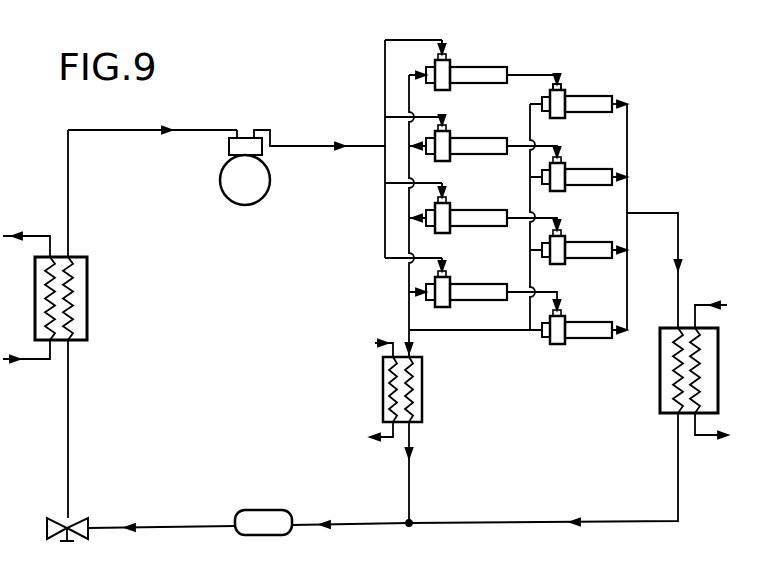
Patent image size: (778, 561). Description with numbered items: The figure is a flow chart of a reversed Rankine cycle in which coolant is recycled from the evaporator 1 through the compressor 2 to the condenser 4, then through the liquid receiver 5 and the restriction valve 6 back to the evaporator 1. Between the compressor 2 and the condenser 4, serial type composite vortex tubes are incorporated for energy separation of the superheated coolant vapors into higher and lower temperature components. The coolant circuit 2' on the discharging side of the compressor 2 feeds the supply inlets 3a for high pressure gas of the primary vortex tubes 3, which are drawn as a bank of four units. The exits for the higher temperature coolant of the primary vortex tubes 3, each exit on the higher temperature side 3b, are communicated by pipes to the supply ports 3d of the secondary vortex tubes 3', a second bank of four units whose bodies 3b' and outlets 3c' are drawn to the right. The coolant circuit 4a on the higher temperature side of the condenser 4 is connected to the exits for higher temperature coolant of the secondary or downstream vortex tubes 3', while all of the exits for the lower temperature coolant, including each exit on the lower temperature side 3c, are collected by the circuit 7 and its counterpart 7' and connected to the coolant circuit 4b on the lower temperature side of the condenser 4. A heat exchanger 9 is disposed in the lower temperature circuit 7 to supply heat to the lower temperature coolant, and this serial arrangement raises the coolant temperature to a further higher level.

The evaporator 1 is at (88, 318).
The compressor 2 is at (245, 186).
The coolant circuit 2' is at (319, 134).
The vortex tube 3 is at (466, 62).
The supply inlet 3a is at (443, 55).
The exit on the higher temperature side 3b is at (411, 66).
The exit on the lower temperature side 3c is at (536, 59).
The second stage unit inlet 3d is at (562, 91).
The secondary vortex tube 3' is at (593, 89).
The second stage unit valve head 3b' is at (572, 127).
The second stage unit outlet 3c' is at (644, 105).
The condenser 4 is at (662, 395).
The coolant circuit on the higher temperature side of the condenser 4a is at (528, 78).
The coolant circuit on the lower temperature side of the condenser 4b is at (538, 523).
The liquid receiver 5 is at (268, 509).
The restriction valve 6 is at (71, 525).
The circuit 7 is at (397, 155).
The second distribution manifold 7' is at (496, 241).
The heat exchanger 9 is at (383, 385).